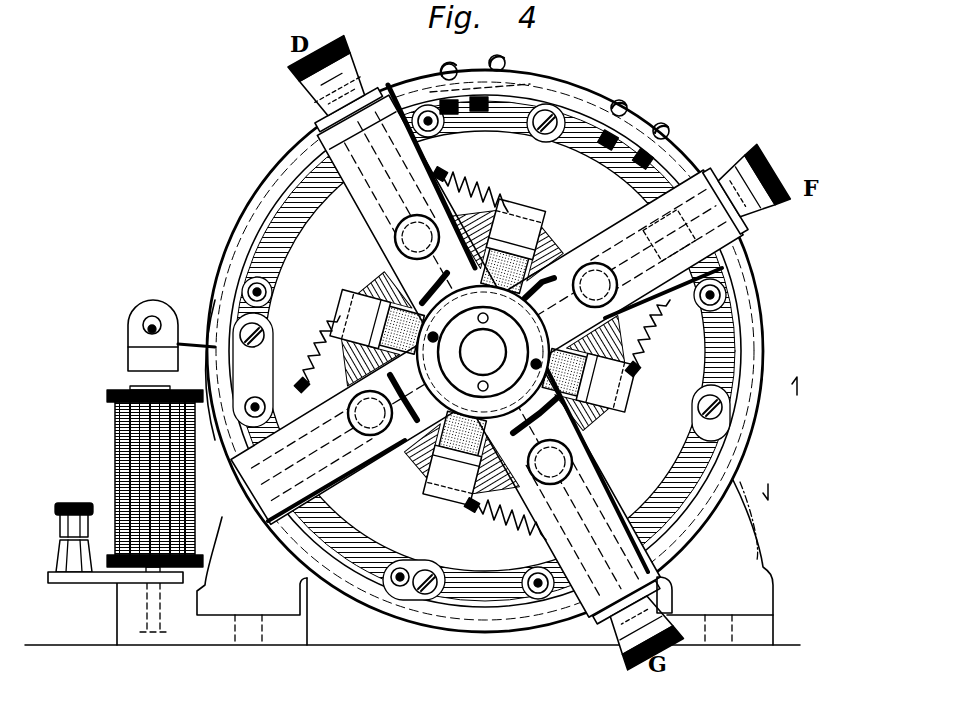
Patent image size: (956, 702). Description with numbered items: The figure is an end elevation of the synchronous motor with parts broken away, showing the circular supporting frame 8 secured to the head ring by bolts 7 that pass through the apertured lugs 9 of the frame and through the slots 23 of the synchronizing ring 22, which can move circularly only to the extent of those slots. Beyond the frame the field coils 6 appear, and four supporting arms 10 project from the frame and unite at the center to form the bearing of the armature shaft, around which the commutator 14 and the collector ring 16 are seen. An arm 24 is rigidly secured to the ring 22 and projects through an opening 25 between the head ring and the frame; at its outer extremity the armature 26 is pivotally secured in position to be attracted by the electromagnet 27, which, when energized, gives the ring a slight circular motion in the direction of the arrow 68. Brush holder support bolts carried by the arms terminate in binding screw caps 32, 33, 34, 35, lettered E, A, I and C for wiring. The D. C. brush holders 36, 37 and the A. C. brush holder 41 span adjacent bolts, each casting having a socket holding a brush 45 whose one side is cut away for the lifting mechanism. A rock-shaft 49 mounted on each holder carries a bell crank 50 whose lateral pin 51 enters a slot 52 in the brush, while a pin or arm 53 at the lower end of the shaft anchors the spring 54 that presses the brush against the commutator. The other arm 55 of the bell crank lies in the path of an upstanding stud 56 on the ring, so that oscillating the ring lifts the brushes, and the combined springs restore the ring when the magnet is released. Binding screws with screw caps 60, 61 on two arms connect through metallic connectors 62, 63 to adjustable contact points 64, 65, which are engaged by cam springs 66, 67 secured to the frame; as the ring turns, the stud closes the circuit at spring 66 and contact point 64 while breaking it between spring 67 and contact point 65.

The field coils 6 is at (645, 238).
The bolts 7 is at (248, 192).
The circular supporting frame 8 is at (372, 600).
The apertured lugs 9 is at (260, 312).
The supporting arms 10 is at (481, 377).
The commutator 14 is at (473, 353).
The collector ring 16 is at (479, 352).
The ring 22 is at (481, 352).
The slots 23 is at (266, 288).
The arm 24 is at (196, 333).
The opening 25 is at (240, 317).
The armature 26 is at (128, 357).
The electromagnet 27 is at (107, 419).
The binding screw cap 32 is at (486, 352).
The binding screw cap 33 is at (515, 331).
The binding screw cap 34 is at (578, 456).
The binding screw cap 35 is at (364, 431).
The D. C. brush holder 36 is at (548, 240).
The D. C. brush holder 37 is at (592, 430).
The A. C. brush holder 41 is at (395, 268).
The brush 45 is at (553, 226).
The rock-shaft 49 is at (426, 206).
The bell crank 50 is at (480, 188).
The lateral pin 51 is at (532, 214).
The slot 52 is at (526, 205).
The pin or arm 53 is at (448, 170).
The spring 54 is at (506, 204).
The arm 55 is at (670, 330).
The upstanding stud 56 is at (722, 297).
The screw cap 60 is at (343, 68).
The screw cap 61 is at (768, 208).
The metallic connector 62 is at (338, 152).
The metallic connector 63 is at (745, 240).
The adjustable contact point 64 is at (414, 176).
The adjustable contact point 65 is at (690, 196).
The cam spring 66 is at (442, 98).
The cam spring 67 is at (680, 180).
The arrow 68 is at (305, 252).